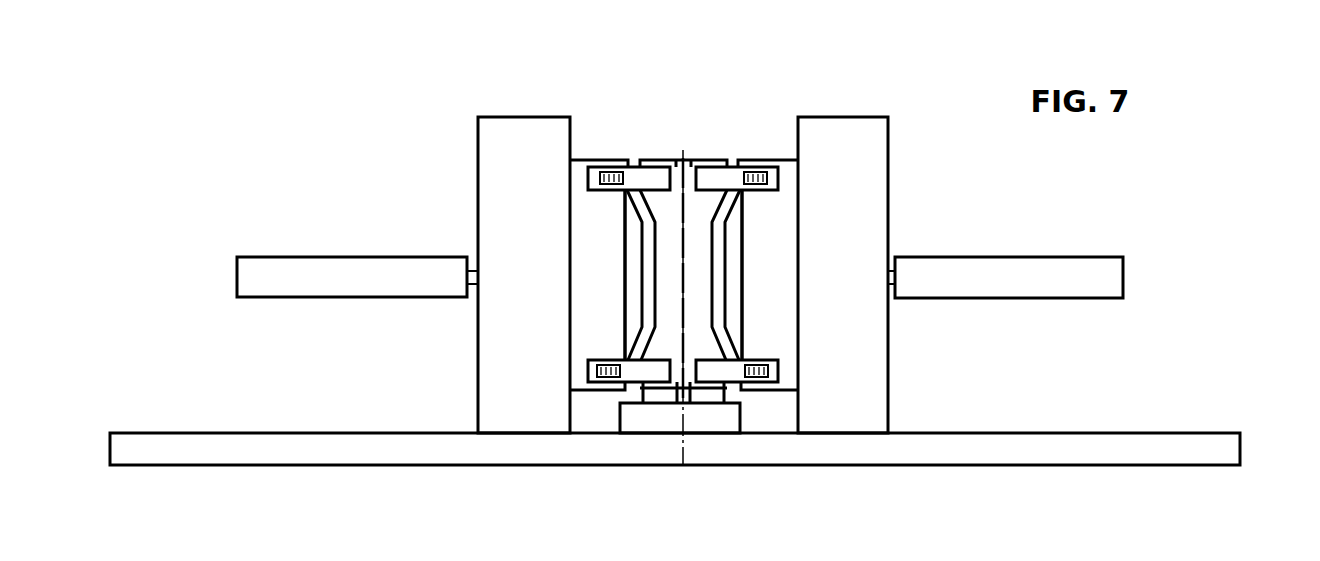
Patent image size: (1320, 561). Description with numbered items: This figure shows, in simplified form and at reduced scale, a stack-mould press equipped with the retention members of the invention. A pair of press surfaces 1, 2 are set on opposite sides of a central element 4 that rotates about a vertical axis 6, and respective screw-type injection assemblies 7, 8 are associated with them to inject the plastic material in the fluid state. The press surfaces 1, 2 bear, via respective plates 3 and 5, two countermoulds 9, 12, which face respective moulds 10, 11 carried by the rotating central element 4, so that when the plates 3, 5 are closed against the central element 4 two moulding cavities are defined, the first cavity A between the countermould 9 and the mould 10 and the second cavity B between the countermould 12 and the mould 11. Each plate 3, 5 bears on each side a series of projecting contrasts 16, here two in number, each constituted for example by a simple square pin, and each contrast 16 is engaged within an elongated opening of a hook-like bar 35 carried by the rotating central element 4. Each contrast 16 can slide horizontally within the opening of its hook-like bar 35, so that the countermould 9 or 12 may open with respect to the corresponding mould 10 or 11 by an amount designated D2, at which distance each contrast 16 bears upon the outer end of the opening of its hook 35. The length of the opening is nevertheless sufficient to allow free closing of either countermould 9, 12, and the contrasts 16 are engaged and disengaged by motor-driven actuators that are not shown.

The press surface 1 is at (492, 178).
The press surface 2 is at (876, 157).
The plate 3 is at (577, 372).
The central element 4 is at (700, 158).
The plate 5 is at (790, 372).
The vertical axis 6 is at (684, 158).
The screw-type injection assembly 7 is at (342, 272).
The screw-type injection assembly 8 is at (1021, 268).
The countermould 9 is at (632, 272).
The mould 10 is at (653, 250).
The mould 11 is at (713, 250).
The countermould 12 is at (733, 272).
The projecting contrast 16 is at (613, 167).
The hook-like bar 35 is at (655, 180).
The region A is at (645, 297).
The second cavity B is at (722, 297).
The opening distance D2 is at (748, 138).